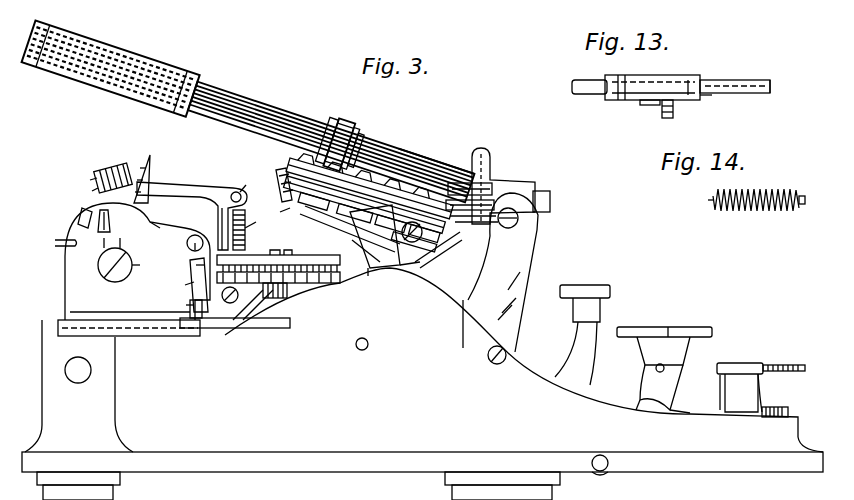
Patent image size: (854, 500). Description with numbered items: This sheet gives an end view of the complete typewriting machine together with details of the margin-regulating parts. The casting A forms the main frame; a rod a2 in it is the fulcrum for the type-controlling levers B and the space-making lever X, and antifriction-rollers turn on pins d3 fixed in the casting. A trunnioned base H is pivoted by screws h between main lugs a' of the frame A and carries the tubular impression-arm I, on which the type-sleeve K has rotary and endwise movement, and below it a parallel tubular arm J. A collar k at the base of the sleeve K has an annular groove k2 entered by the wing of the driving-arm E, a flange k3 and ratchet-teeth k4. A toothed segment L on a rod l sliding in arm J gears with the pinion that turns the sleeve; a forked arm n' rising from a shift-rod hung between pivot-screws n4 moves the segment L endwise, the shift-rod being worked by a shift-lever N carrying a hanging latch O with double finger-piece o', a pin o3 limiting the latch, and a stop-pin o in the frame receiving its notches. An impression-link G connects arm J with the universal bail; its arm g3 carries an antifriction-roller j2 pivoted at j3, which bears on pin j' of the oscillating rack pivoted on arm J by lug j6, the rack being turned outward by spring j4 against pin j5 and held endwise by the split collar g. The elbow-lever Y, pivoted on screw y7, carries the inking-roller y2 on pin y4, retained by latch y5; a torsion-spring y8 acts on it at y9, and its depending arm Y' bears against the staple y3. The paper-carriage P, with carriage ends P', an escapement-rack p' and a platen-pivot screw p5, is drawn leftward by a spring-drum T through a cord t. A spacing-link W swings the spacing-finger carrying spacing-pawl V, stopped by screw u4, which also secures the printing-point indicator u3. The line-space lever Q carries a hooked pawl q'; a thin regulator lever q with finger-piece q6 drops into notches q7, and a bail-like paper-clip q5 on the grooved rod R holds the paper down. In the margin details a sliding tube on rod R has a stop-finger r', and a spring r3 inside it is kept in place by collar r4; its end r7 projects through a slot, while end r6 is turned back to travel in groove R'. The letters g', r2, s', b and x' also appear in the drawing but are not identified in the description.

In FIG. 3, the type-sleeve K is at (249, 114).
In FIG. 3, the collar k is at (339, 133).
In FIG. 3, the annular groove k2 is at (355, 129).
In FIG. 3, the flange k3 is at (367, 138).
In FIG. 3, the ratchet-teeth k4 is at (326, 129).
In FIG. 3, the tubular arm I is at (437, 151).
In FIG. 3, the trunnioned base H is at (511, 186).
In FIG. 3, the screws h is at (483, 215).
In FIG. 3, the toothed segment L is at (503, 272).
In FIG. 3, the main lugs a' is at (522, 275).
In FIG. 3, the forked arm n' is at (515, 304).
In FIG. 3, the pivot-screws n4 is at (497, 366).
In FIG. 3, the pins d3 is at (355, 337).
In FIG. 3, the tubular arm J is at (370, 190).
In FIG. 3, the pin j' is at (359, 192).
In FIG. 3, the antifriction-roller j2 is at (317, 219).
In FIG. 3, the pivot j3 is at (354, 223).
In FIG. 3, the spring j4 is at (391, 203).
In FIG. 3, the pin j5 is at (407, 243).
In FIG. 3, the lug j6 is at (414, 249).
In FIG. 3, the rod l is at (278, 185).
In FIG. 3, the driving-arm E is at (375, 249).
In FIG. 3, the impression-link G is at (406, 277).
In FIG. 3, the split collar g is at (381, 237).
In FIG. 3, the pivot g' is at (403, 232).
In FIG. 3, the arm g3 is at (366, 253).
In FIG. 3, the elbow-lever Y is at (192, 201).
In FIG. 3, the depending arm Y' is at (214, 229).
In FIG. 3, the line-space lever Q is at (153, 179).
In FIG. 3, the inking-roller y2 is at (113, 168).
In FIG. 3, the staple y3 is at (283, 219).
In FIG. 3, the pin y4 is at (87, 174).
In FIG. 3, the latch y5 is at (86, 189).
In FIG. 3, the screw y7 is at (243, 178).
In FIG. 3, the torsion-spring y8 is at (250, 230).
In FIG. 3, the spring attachment point y9 is at (257, 216).
In FIG. 3, the spring-drum T is at (278, 258).
In FIG. 3, the cord t is at (276, 259).
In FIG. 3, the spacing-pawl V is at (253, 305).
In FIG. 3, the spacing-link W is at (256, 308).
In FIG. 3, the screw u4 is at (235, 310).
In FIG. 3, the indicator u3 is at (158, 216).
In FIG. 3, the paper-carriage P is at (125, 269).
In FIG. 3, the carriage ends P' is at (130, 307).
In FIG. 3, the screw p5 is at (127, 265).
In FIG. 3, the escapement-rack p' is at (180, 306).
In FIG. 3, the line-space regulator lever q is at (59, 221).
In FIG. 3, the hooked pawl q' is at (91, 214).
In FIG. 3, the paper-clip q5 is at (56, 257).
In FIG. 3, the finger-piece q6 is at (93, 250).
In FIG. 3, the notches q7 is at (116, 237).
In FIG. 3, the pivot r2 is at (186, 229).
In FIG. 13, the pivot r2 is at (676, 112).
In FIG. 3, the grooved rod R is at (190, 281).
In FIG. 13, the grooved rod R is at (672, 77).
In FIG. 3, the spring s' is at (180, 289).
In FIG. 3, the main frame A is at (422, 384).
In FIG. 3, the rod a2 is at (78, 377).
In FIG. 3, the stop-pin o is at (608, 465).
In FIG. 3, the bearing b is at (659, 338).
In FIG. 3, the type-controlling levers B is at (643, 368).
In FIG. 3, the double finger-piece o' is at (664, 355).
In FIG. 3, the pin o3 is at (658, 376).
In FIG. 3, the hanging latch O is at (635, 391).
In FIG. 3, the shift-lever N is at (681, 397).
In FIG. 3, the space-making lever X is at (784, 357).
In FIG. 3, the nut x' is at (775, 402).
In FIG. 13, the groove R' is at (781, 94).
In FIG. 13, the stop-fingers r' is at (627, 89).
In FIG. 13, the spring end r7 is at (688, 80).
In FIG. 14, the spring end r7 is at (810, 200).
In FIG. 13, the collar r4 is at (709, 104).
In FIG. 14, the springs r3 is at (756, 210).
In FIG. 14, the spring end r6 is at (699, 198).